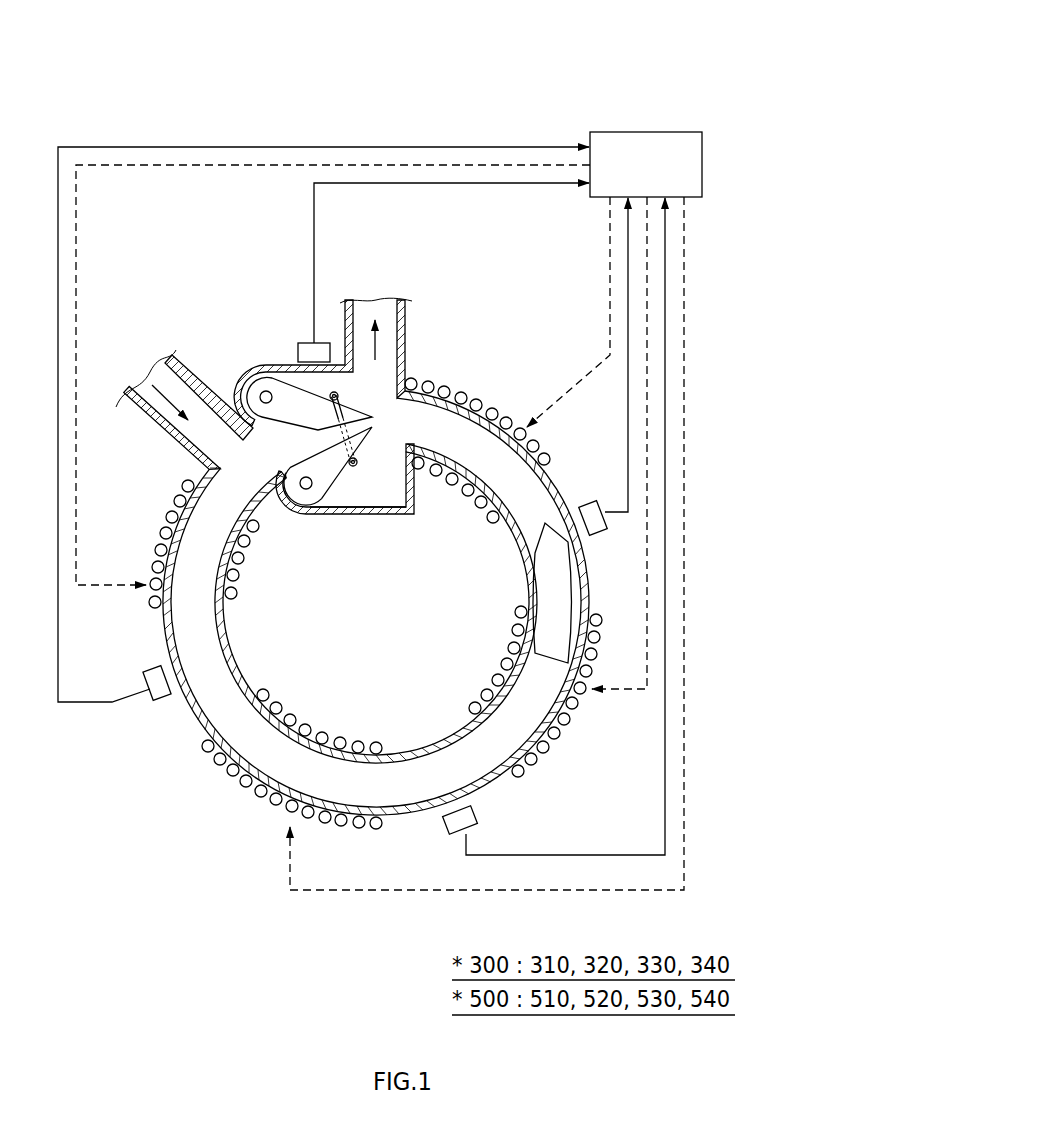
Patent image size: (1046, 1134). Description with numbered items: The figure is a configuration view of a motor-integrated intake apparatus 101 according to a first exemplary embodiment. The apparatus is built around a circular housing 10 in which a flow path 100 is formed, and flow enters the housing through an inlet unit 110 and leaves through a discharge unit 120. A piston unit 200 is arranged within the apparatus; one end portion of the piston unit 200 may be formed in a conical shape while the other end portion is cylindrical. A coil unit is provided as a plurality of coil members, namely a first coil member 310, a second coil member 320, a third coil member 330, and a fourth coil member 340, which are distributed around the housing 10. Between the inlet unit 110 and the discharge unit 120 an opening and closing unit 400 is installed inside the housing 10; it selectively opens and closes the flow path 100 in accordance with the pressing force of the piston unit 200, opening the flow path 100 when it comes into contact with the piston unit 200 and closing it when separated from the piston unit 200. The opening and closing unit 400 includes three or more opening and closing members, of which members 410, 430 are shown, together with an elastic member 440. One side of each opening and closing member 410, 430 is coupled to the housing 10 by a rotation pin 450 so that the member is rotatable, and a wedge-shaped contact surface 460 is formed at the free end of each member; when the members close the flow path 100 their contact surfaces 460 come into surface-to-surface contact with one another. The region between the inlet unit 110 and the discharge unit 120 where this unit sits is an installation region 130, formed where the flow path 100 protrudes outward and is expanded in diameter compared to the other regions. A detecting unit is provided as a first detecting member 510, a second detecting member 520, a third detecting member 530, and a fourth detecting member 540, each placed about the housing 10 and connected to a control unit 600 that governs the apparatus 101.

The motor-integrated intake apparatus 101 is at (712, 29).
The circular housing 10 is at (232, 657).
The flow path 100 is at (222, 686).
The inlet unit 110 is at (190, 367).
The discharge unit 120 is at (404, 311).
The installation region 130 is at (340, 440).
The piston unit 200 is at (562, 588).
The first coil member 310 is at (245, 558).
The second coil member 320 is at (307, 726).
The third coil member 330 is at (492, 522).
The fourth coil member 340 is at (484, 692).
The opening and closing unit 400 is at (290, 442).
The opening and closing member 410 is at (414, 378).
The opening and closing member 430 is at (410, 508).
The elastic member 440 is at (348, 408).
The rotation pin 450 is at (262, 390).
The contact surface 460 is at (377, 416).
The first detecting member 510 is at (150, 701).
The second detecting member 520 is at (483, 812).
The third detecting member 530 is at (594, 500).
The fourth detecting member 540 is at (300, 343).
The control unit 600 is at (640, 143).